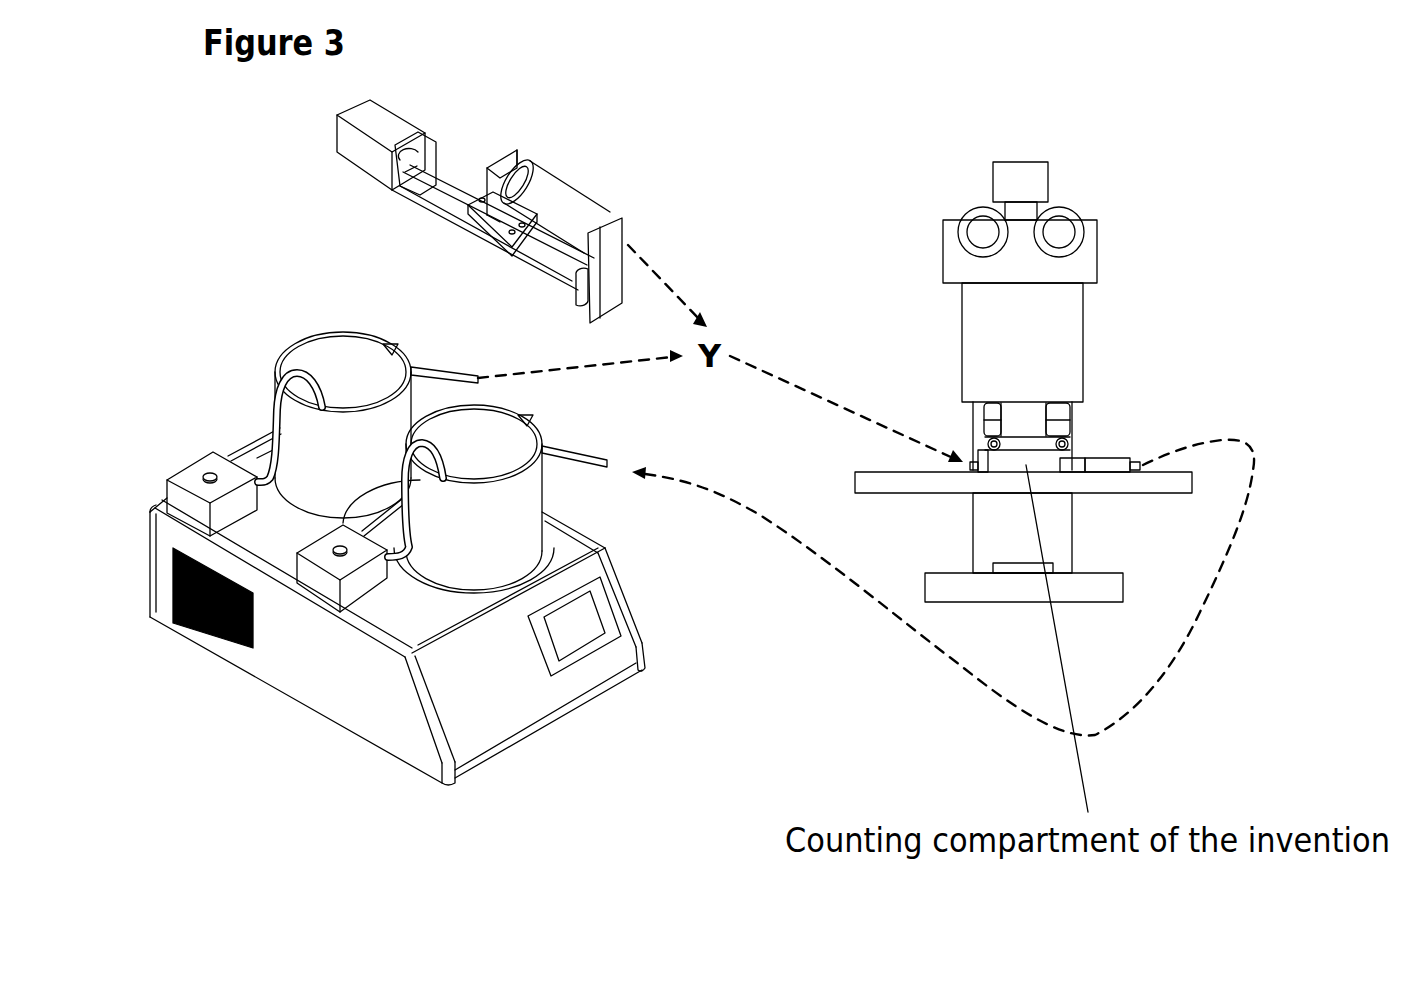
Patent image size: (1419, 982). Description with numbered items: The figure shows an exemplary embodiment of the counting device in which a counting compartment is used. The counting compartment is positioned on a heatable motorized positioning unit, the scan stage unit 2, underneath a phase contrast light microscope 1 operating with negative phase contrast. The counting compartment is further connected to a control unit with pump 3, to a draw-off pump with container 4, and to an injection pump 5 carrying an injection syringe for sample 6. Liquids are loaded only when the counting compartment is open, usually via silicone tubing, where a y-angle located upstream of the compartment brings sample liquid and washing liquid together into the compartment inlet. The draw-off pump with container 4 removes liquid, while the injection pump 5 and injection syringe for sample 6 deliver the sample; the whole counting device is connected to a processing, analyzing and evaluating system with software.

The phase contrast light microscope 1 is at (1085, 260).
The scan stage unit 2 is at (1182, 472).
The control unit with pump 3 is at (397, 654).
The draw-off pump with container 4 is at (432, 620).
The injection pump 5 is at (363, 160).
The injection syringe for sample 6 is at (553, 197).